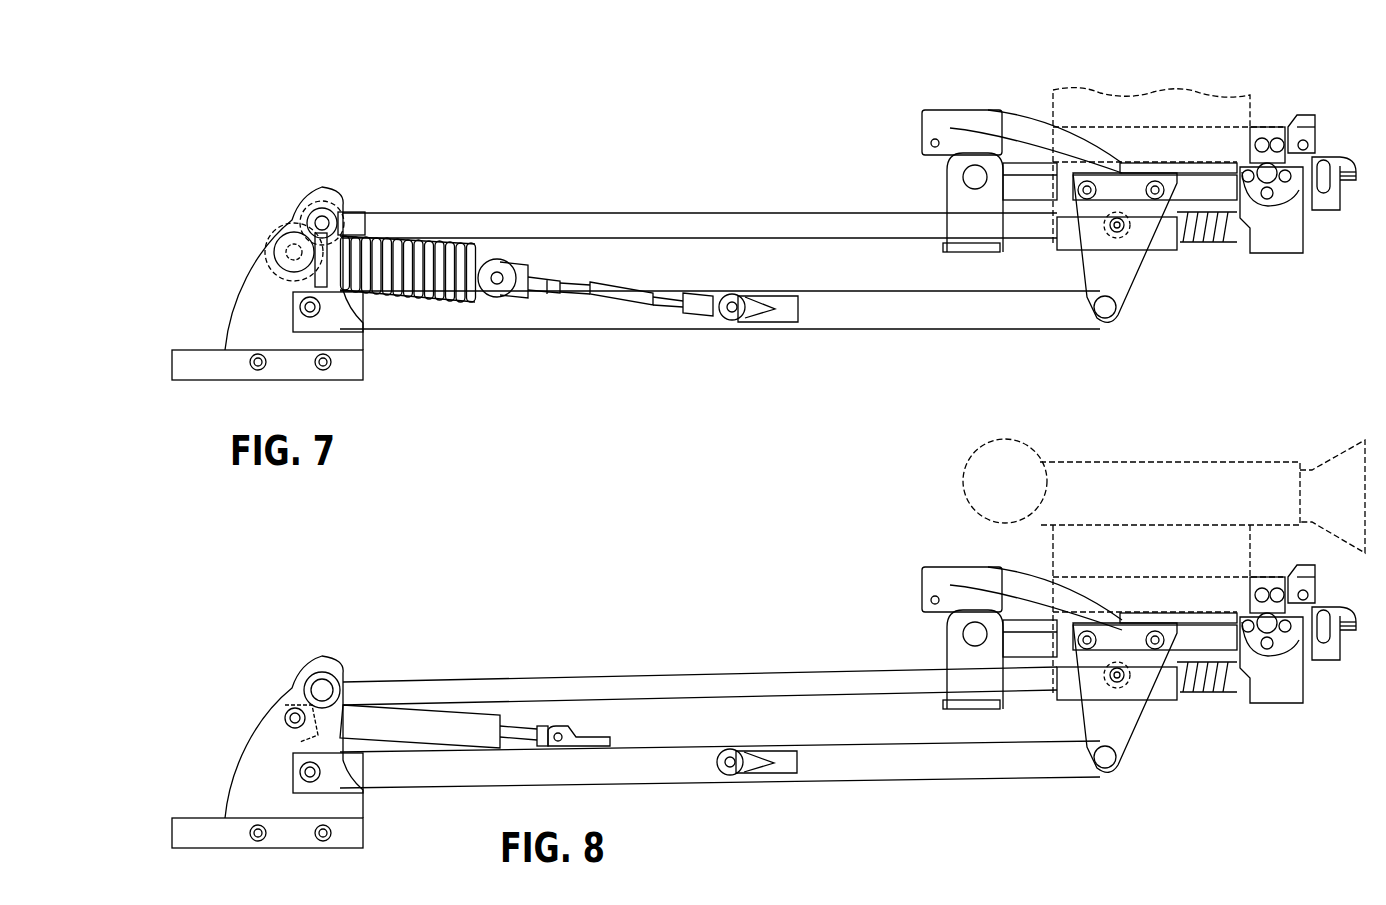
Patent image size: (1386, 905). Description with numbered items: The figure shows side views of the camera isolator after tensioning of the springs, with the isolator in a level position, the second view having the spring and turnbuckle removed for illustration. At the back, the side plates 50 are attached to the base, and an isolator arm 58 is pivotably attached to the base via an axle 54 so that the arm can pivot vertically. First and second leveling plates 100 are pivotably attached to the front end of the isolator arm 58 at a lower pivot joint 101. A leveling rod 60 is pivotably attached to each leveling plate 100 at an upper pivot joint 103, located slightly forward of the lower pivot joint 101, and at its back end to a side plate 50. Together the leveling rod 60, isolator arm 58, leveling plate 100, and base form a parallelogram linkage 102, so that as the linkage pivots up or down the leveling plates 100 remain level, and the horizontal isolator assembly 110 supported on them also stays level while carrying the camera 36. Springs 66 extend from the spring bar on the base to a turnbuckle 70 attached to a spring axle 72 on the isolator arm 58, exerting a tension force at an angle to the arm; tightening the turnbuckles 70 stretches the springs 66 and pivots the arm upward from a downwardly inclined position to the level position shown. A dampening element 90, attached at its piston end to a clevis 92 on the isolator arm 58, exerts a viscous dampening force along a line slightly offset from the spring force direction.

In FIG. 7, the camera 36 is at (1153, 110).
In FIG. 8, the camera 36 is at (1152, 490).
In FIG. 7, the side plate 50 is at (242, 335).
In FIG. 8, the side plate 50 is at (248, 765).
In FIG. 7, the axle 54 is at (292, 312).
In FIG. 7, the isolator arm 58 is at (888, 315).
In FIG. 8, the isolator arm 58 is at (835, 768).
In FIG. 7, the leveling rod 60 is at (778, 222).
In FIG. 7, the spring 66 is at (467, 308).
In FIG. 7, the turnbuckle 70 is at (627, 311).
In FIG. 7, the spring axle 72 is at (262, 231).
In FIG. 8, the dampening element 90 is at (433, 722).
In FIG. 8, the clevis 92 is at (565, 727).
In FIG. 7, the leveling plate 100 is at (1120, 273).
In FIG. 8, the leveling plate 100 is at (1120, 717).
In FIG. 7, the lower pivot joint 101 is at (1105, 320).
In FIG. 8, the lower pivot joint 101 is at (1113, 773).
In FIG. 7, the parallelogram linkage 102 is at (763, 340).
In FIG. 8, the parallelogram linkage 102 is at (748, 662).
In FIG. 7, the upper pivot joint 103 is at (1103, 228).
In FIG. 8, the upper pivot joint 103 is at (1103, 683).
In FIG. 7, the horizontal isolator assembly 110 is at (980, 97).
In FIG. 8, the horizontal isolator assembly 110 is at (948, 547).